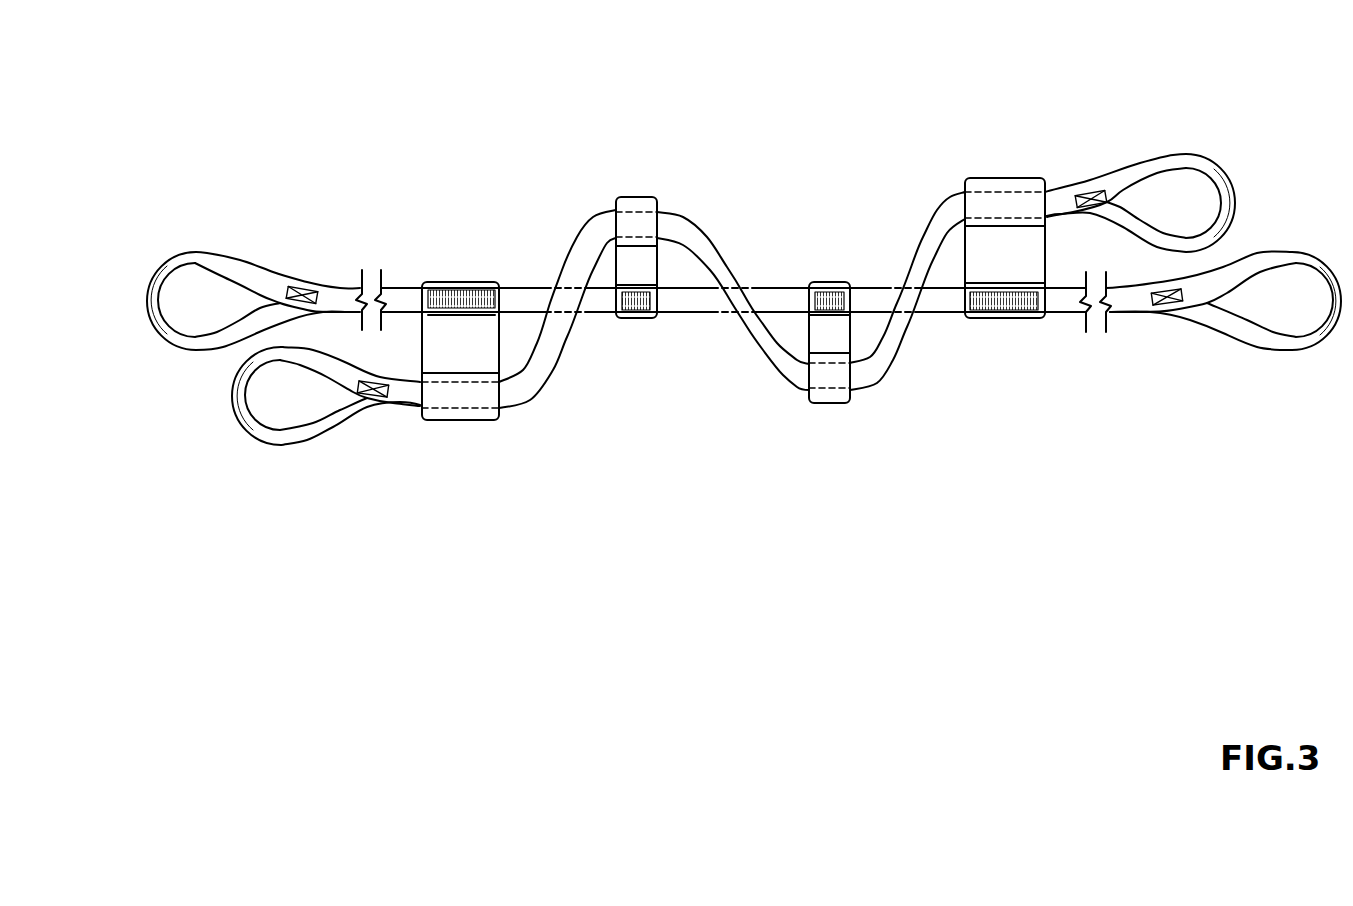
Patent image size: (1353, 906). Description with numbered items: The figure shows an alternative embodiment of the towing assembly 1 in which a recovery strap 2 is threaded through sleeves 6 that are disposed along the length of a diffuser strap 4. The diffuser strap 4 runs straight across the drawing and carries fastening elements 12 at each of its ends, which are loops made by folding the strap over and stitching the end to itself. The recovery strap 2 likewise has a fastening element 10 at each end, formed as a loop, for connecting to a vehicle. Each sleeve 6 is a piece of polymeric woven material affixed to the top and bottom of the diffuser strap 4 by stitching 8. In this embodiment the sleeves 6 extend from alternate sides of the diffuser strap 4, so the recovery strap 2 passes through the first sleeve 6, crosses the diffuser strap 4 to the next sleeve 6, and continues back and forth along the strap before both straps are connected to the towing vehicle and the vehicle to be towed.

The towing assembly 1 is at (430, 85).
The recovery strap 2 is at (548, 361).
The diffuser strap 4 is at (403, 297).
The sleeves 6 is at (623, 203).
The stitching 8 is at (637, 303).
The fastening element 10 is at (333, 415).
The fastening elements 12 is at (196, 254).